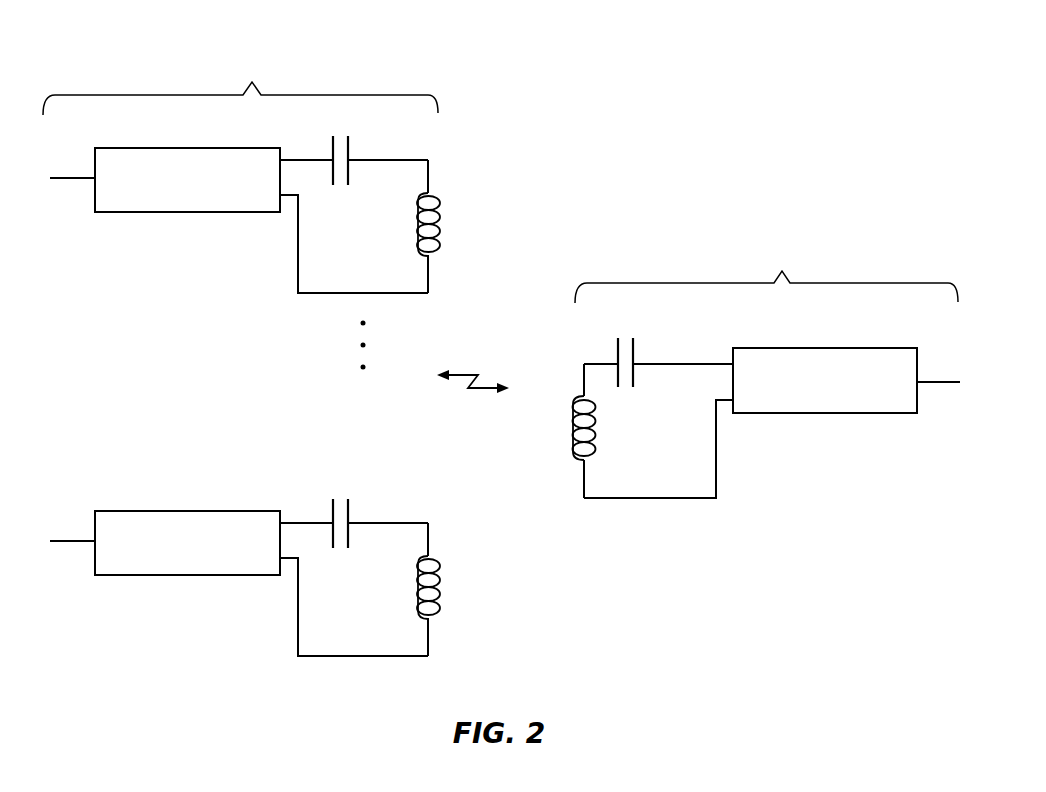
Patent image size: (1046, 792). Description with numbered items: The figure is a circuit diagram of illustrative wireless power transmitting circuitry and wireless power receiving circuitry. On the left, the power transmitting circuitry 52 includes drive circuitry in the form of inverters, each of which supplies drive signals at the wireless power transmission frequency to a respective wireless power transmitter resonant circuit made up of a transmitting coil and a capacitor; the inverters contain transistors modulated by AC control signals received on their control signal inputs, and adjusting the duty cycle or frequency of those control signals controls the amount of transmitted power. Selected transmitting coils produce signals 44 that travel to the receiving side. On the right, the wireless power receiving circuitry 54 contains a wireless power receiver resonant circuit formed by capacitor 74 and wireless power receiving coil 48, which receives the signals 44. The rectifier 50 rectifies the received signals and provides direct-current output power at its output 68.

The signals 44 is at (477, 392).
The wireless power receiving coil 48 is at (553, 434).
The rectifier 50 is at (830, 413).
The power transmitting circuitry 52 is at (240, 89).
The wireless power receiving circuitry 54 is at (766, 277).
The output 68 is at (940, 382).
The capacitor 74 is at (652, 347).